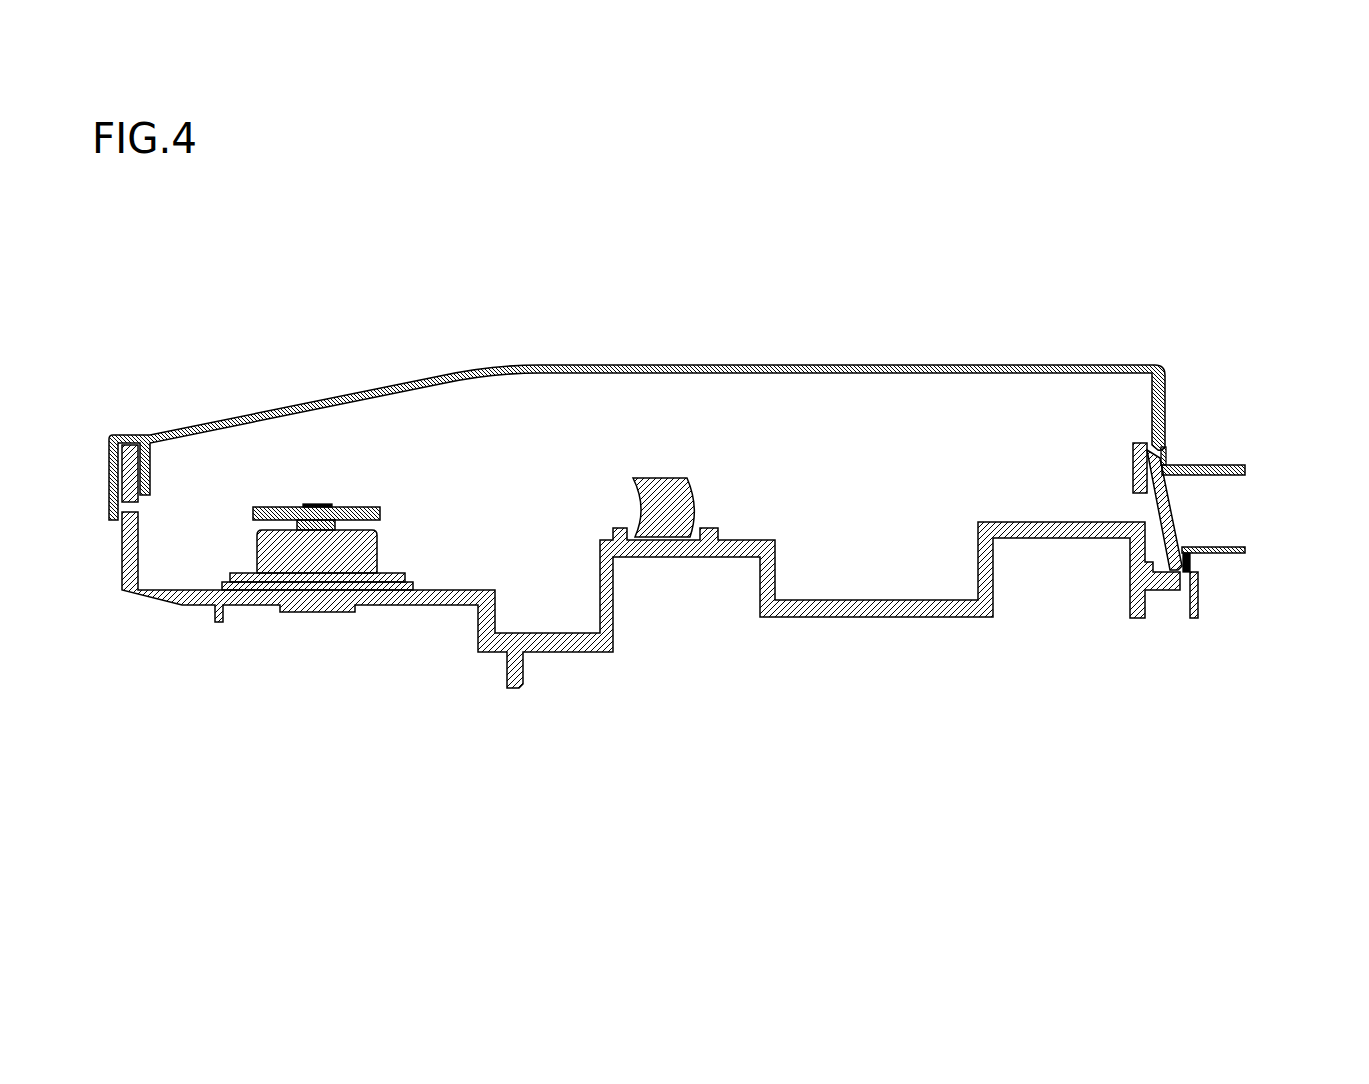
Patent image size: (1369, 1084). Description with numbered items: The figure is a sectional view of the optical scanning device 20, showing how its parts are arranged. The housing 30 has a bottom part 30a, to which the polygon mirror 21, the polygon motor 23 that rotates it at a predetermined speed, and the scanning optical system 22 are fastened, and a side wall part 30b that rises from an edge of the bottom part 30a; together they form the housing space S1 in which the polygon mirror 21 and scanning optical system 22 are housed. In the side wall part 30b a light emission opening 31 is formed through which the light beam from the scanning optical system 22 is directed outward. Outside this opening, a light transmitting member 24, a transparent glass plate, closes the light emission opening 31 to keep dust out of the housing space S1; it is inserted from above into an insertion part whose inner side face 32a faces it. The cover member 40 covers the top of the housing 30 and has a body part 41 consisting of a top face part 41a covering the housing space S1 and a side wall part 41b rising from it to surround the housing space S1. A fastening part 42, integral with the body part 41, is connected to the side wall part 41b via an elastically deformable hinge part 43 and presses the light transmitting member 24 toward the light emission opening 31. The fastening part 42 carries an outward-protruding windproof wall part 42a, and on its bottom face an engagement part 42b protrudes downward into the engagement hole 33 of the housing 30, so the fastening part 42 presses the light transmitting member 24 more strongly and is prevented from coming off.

The optical scanning device 20 is at (1170, 220).
The cover member 40 is at (765, 365).
The body part 41 is at (1143, 306).
The top face part 41a is at (1050, 366).
The side wall part 41b is at (1152, 403).
The housing space S1 is at (475, 407).
The housing 30 is at (868, 616).
The bottom part 30a is at (422, 606).
The side wall part 30b is at (1135, 468).
The light emission opening 31 is at (1133, 509).
The inner side face 32a is at (1148, 447).
The light transmitting member 24 is at (1172, 513).
The hinge part 43 is at (1170, 455).
The fastening part 42 is at (1223, 465).
The windproof wall part 42a is at (1245, 550).
The engagement part 42b is at (1190, 562).
The engagement hole 33 is at (1185, 585).
The scanning optical system 22 is at (663, 512).
The polygon motor 23 is at (320, 557).
The polygon mirror 21 is at (253, 512).